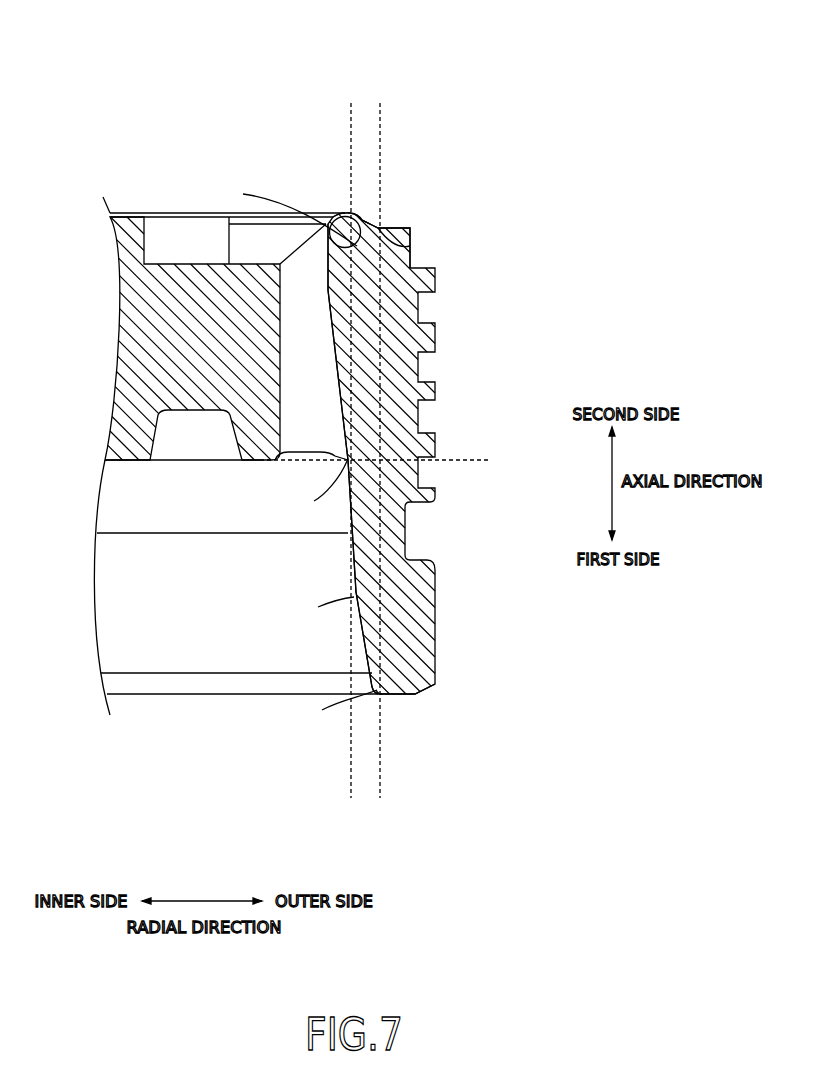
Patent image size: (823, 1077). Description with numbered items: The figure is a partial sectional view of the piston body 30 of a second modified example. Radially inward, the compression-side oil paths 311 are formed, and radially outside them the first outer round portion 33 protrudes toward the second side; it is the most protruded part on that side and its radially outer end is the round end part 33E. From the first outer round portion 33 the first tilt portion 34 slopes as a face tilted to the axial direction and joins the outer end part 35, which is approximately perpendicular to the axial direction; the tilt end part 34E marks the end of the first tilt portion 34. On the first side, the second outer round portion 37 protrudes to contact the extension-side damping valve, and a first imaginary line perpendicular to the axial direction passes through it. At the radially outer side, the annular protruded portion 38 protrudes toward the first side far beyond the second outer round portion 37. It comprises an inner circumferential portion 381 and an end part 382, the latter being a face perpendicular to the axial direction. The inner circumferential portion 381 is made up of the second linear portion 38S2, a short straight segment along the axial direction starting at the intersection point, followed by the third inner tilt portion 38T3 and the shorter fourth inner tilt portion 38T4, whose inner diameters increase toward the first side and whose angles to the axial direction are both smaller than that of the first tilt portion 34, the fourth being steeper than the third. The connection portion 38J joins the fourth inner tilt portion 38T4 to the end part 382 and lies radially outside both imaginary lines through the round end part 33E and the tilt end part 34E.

The piston body 30 is at (355, 421).
The first outer round portion 33 is at (352, 215).
The round end part 33E is at (368, 223).
The first tilt portion 34 is at (386, 226).
The tilt end part 34E is at (386, 240).
The outer end part 35 is at (397, 228).
The compression-side oil paths 311 is at (313, 361).
The second outer round portion 37 is at (262, 461).
The annular protruded portion 38 is at (385, 449).
The inner circumferential portion 381 is at (286, 657).
The end part 382 is at (410, 696).
The second linear portion 38S2 is at (350, 507).
The third inner tilt portion 38T3 is at (366, 648).
The fourth inner tilt portion 38T4 is at (376, 694).
The connection portion 38J is at (382, 697).